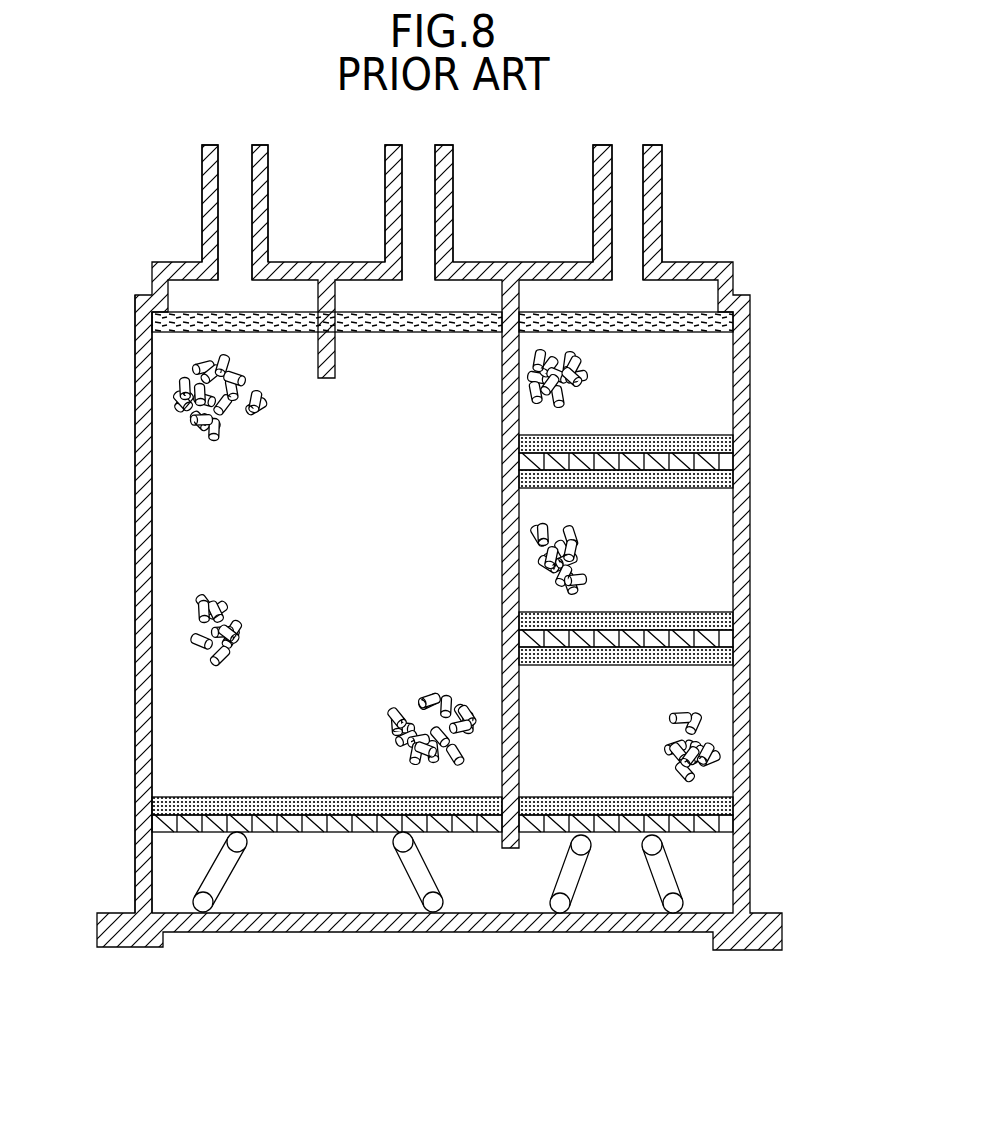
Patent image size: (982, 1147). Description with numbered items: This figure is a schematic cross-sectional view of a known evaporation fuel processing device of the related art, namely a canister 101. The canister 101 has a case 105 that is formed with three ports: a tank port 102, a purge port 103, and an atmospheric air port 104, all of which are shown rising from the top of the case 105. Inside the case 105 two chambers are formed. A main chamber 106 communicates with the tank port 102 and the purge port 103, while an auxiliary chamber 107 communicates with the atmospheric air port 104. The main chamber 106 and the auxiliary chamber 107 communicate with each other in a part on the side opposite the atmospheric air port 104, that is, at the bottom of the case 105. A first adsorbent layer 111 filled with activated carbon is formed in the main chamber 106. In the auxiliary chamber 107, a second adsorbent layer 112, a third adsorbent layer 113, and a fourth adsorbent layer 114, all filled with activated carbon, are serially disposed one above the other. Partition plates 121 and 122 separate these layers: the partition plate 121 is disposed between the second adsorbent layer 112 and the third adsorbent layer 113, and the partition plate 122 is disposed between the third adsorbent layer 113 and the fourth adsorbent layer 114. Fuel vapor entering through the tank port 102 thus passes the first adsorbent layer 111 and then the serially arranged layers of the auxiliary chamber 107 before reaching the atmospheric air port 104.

The canister 101 is at (148, 278).
The tank port 102 is at (202, 192).
The purge port 103 is at (387, 192).
The atmospheric air port 104 is at (593, 190).
The case 105 is at (145, 661).
The main chamber 106 is at (172, 562).
The auxiliary chamber 107 is at (710, 518).
The first adsorbent layer 111 is at (172, 607).
The second adsorbent layer 112 is at (725, 690).
The third adsorbent layer 113 is at (712, 583).
The fourth adsorbent layer 114 is at (722, 392).
The partition plate 121 is at (716, 637).
The partition plate 122 is at (720, 458).